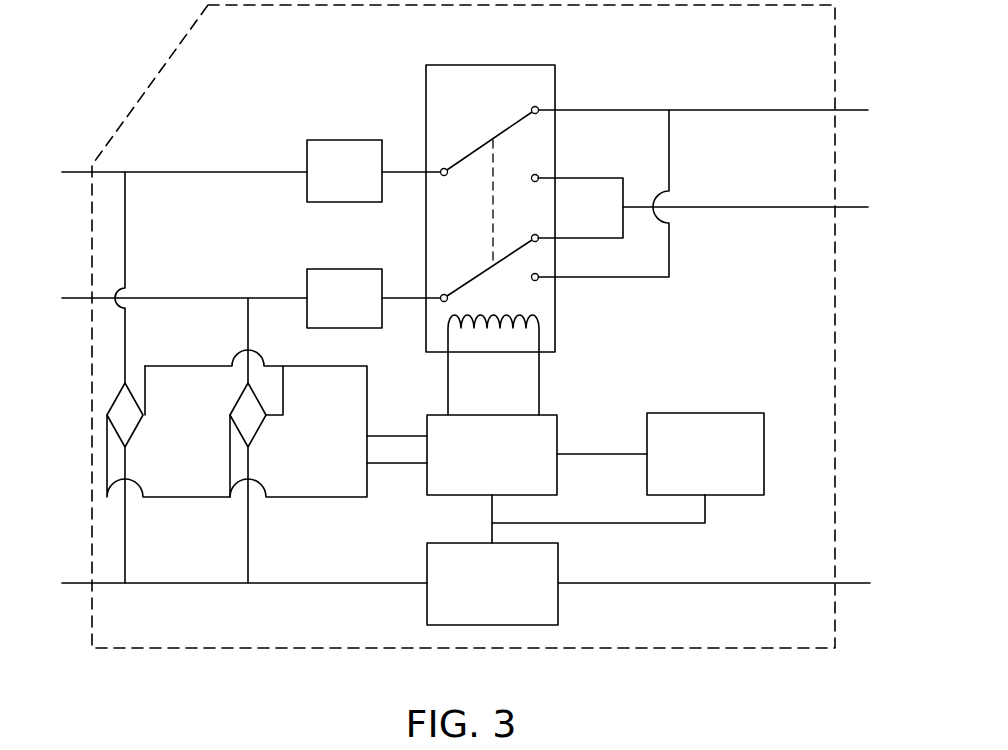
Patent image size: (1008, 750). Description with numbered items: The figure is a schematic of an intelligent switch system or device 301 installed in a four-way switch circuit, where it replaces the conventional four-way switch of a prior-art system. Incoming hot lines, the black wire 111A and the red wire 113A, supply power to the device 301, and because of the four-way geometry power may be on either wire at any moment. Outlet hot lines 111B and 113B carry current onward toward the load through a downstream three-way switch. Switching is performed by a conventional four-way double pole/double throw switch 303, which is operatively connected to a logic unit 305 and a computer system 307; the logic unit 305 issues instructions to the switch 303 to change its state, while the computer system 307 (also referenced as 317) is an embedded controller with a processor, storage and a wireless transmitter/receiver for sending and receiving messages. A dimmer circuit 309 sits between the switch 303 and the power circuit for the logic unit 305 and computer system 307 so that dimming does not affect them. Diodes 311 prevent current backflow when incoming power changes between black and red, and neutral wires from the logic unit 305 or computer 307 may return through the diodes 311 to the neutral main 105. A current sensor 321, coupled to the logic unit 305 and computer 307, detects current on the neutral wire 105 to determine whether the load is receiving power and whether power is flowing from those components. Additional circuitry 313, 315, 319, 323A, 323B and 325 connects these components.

The intelligent switch system 301 is at (185, 652).
The four-way switch 303 is at (471, 65).
The logic unit 305 is at (549, 413).
The computer system 307 is at (752, 412).
The dimmer circuit 309 is at (307, 183).
The diodes 311 is at (232, 404).
The rectified power lines 313 is at (367, 430).
The logic to CPU signal line 315 is at (609, 452).
The computer system 317 is at (592, 521).
The logic to current sensor connection 319 is at (491, 512).
The current sensor 321 is at (560, 598).
The black wire tap 323A is at (127, 250).
The red wire tap 323B is at (247, 319).
The relay coil 325 is at (545, 330).
The neutral wire 105 is at (293, 585).
The black wire 111A is at (70, 170).
The outlet hot line 111B is at (775, 108).
The red wire 113A is at (67, 296).
The outlet hot line 113B is at (775, 205).